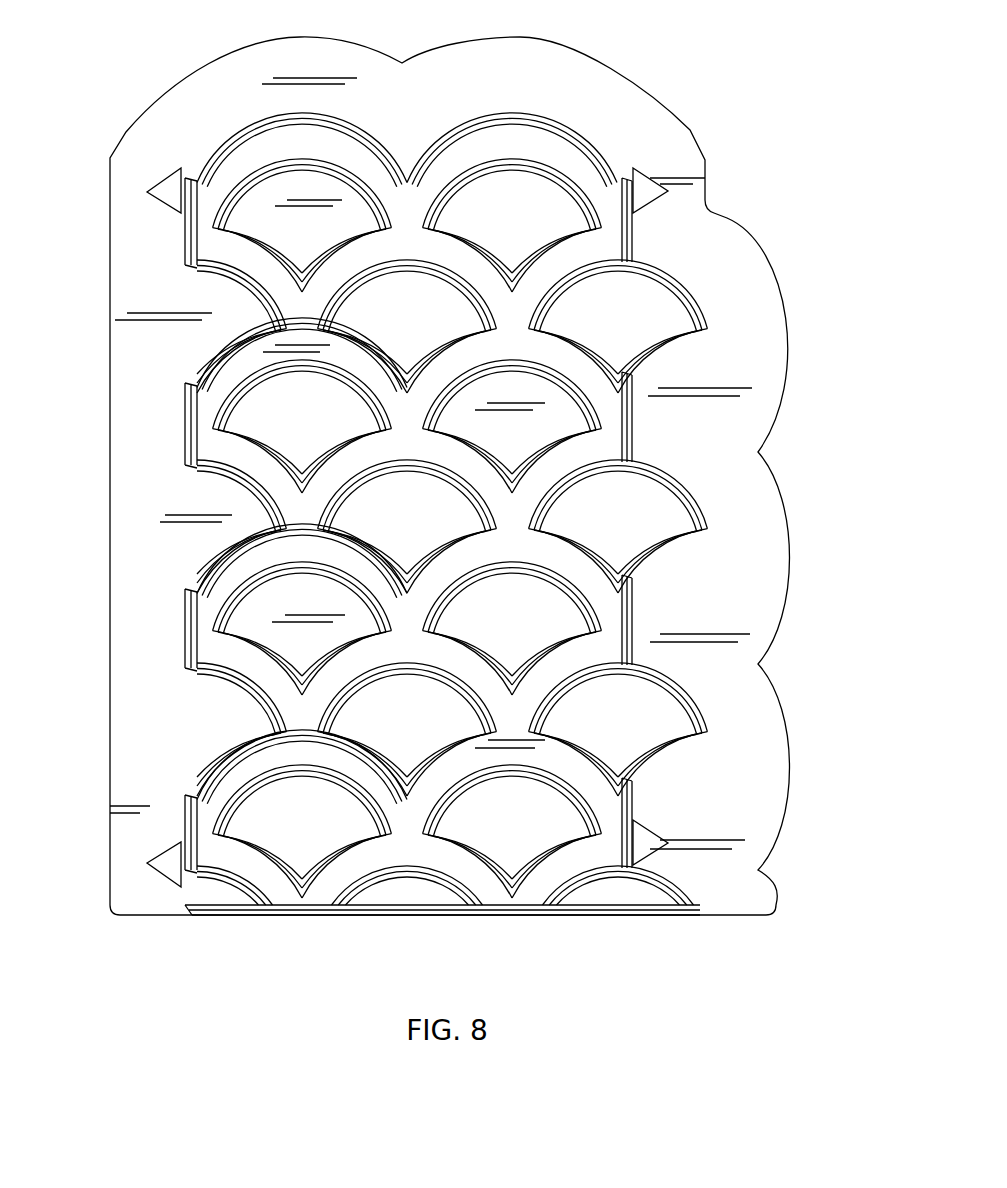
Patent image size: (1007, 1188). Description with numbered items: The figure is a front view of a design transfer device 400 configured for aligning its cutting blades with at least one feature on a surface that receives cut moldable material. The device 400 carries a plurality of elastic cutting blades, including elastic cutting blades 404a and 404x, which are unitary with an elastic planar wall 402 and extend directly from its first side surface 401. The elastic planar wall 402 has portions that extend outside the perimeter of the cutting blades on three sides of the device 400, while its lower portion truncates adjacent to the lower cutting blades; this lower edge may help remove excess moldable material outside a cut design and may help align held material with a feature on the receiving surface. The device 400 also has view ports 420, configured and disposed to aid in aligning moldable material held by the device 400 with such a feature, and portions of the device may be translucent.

The design transfer device 400 is at (436, 457).
The first side surface 401 is at (478, 158).
The elastic planar wall 402 is at (132, 208).
The elastic cutting blade 404a is at (290, 122).
The elastic cutting blade 404x is at (205, 408).
The view port 420 is at (168, 190).